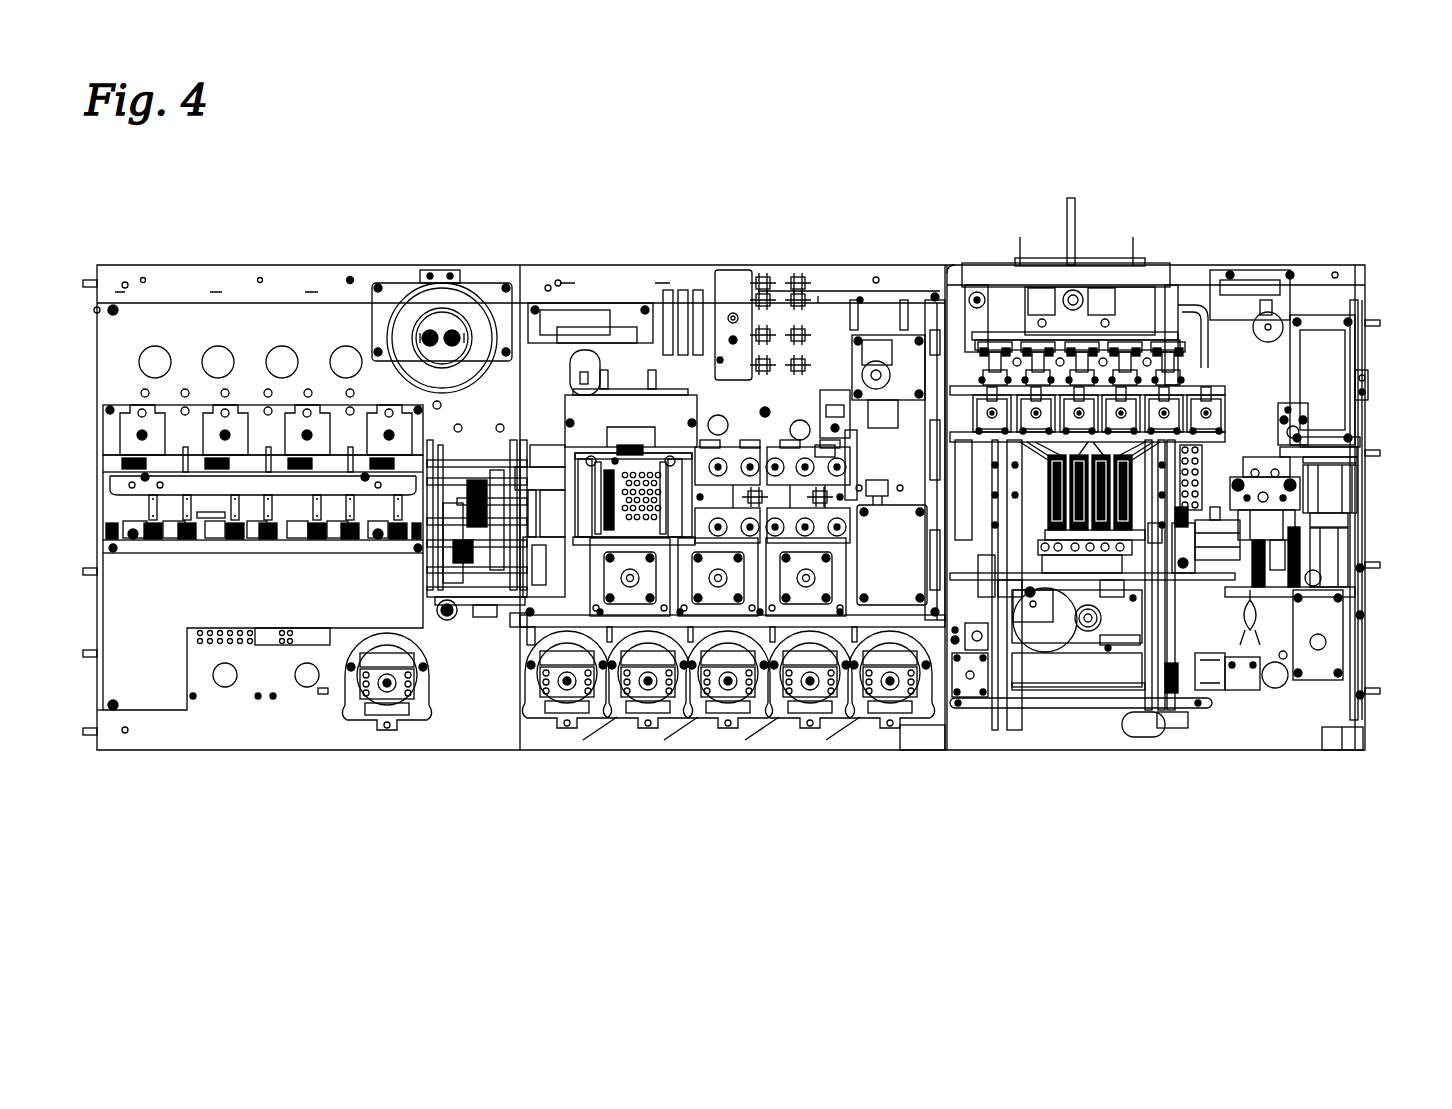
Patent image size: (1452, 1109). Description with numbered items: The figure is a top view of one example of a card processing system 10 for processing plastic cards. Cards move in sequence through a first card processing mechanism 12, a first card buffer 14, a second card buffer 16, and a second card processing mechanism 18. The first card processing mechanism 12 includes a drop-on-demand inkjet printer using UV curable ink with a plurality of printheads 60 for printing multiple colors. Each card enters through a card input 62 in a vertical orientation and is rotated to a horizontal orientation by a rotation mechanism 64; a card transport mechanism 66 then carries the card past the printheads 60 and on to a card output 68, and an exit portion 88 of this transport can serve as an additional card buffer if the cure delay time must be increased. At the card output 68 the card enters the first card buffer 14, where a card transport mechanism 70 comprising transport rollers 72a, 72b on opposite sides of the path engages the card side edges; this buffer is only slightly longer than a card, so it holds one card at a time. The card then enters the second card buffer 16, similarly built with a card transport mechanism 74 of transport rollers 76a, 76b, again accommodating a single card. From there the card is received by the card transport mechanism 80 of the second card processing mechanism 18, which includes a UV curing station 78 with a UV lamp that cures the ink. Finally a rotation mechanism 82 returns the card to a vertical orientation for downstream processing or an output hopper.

The card processing system 10 is at (1127, 173).
The first card processing mechanism 12 is at (1359, 758).
The first card buffer 14 is at (762, 757).
The second card buffer 16 is at (676, 757).
The second card processing mechanism 18 is at (513, 757).
The printheads 60 is at (1082, 566).
The card input 62 is at (1363, 445).
The rotation mechanism 64 is at (1297, 415).
The card transport mechanism 66 is at (1273, 500).
The card output 68 is at (870, 483).
The card transport mechanism 70 is at (825, 428).
The transport roller 72a is at (797, 447).
The transport roller 72b is at (803, 537).
The card transport mechanism 74 is at (738, 422).
The transport roller 76a is at (727, 447).
The transport roller 76b is at (717, 537).
The UV curing station 78 is at (630, 428).
The card transport mechanism 80 is at (541, 490).
The rotation mechanism 82 is at (460, 440).
The exit portion 88 is at (928, 758).